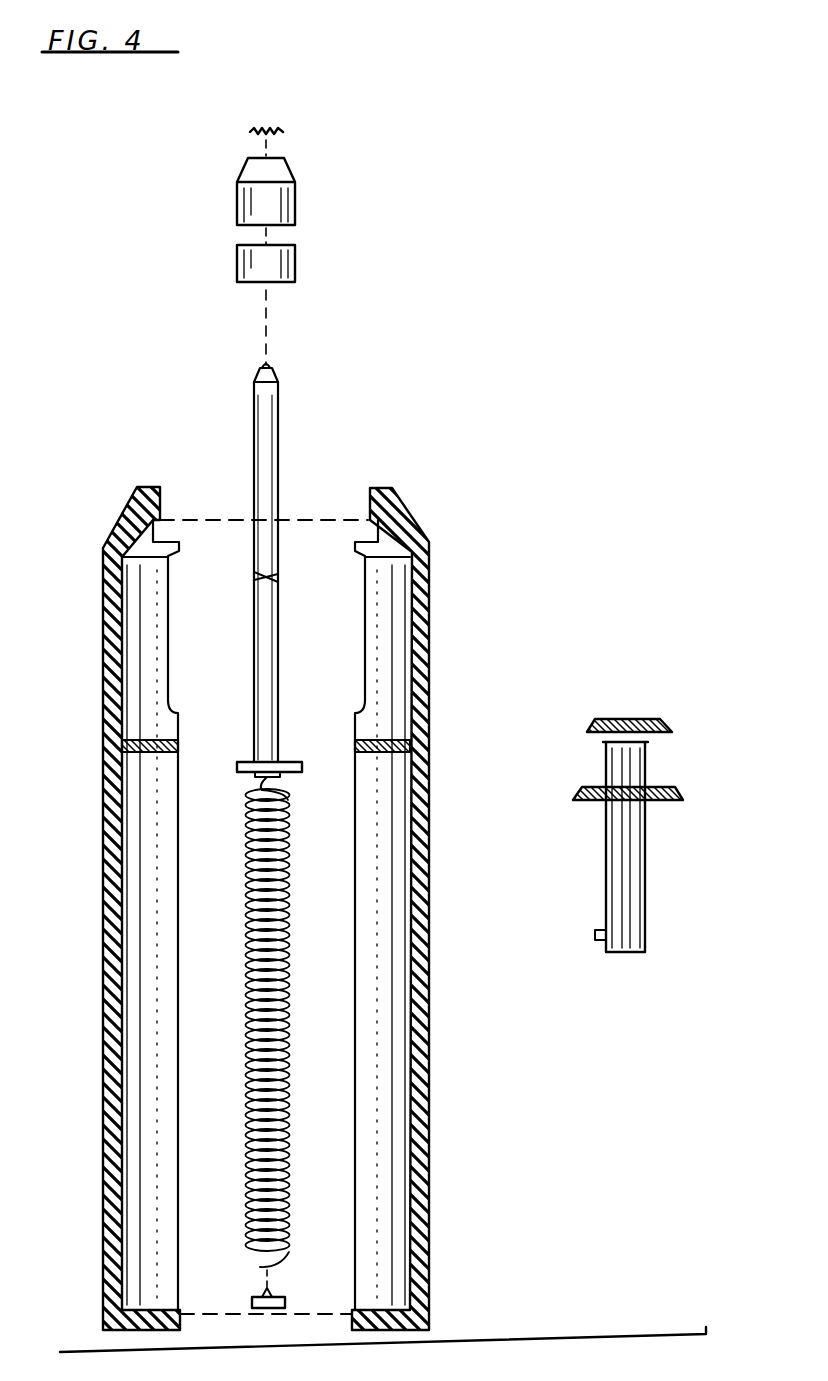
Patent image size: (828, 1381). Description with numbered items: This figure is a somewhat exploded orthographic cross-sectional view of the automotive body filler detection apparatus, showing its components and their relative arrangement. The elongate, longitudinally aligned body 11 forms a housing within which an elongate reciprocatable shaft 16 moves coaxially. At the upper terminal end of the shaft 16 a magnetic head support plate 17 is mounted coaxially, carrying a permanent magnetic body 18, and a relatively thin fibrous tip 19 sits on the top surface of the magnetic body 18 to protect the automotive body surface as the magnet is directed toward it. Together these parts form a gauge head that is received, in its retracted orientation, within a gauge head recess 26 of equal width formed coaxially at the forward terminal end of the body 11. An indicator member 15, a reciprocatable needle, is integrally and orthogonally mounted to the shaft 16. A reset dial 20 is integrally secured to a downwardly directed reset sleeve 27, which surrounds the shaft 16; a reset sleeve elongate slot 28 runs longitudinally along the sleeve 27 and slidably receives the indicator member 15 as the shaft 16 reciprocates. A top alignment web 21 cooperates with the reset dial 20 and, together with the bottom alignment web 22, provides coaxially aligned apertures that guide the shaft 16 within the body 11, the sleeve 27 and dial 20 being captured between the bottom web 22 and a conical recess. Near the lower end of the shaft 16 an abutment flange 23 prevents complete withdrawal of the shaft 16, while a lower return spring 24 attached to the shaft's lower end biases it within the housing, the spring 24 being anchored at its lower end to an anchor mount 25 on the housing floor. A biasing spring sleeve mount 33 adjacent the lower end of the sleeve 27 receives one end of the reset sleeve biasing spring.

The body 11 is at (430, 562).
The indicator member 15 is at (278, 578).
The reciprocatable shaft 16 is at (268, 456).
The magnetic head support plate 17 is at (296, 262).
The permanent magnetic body 18 is at (296, 204).
The fibrous tip 19 is at (285, 132).
The reset dial 20 is at (685, 795).
The top alignment web 21 is at (667, 722).
The bottom alignment web 22 is at (163, 742).
The abutment flange 23 is at (283, 760).
The lower return spring 24 is at (290, 895).
The anchor mount 25 is at (285, 1303).
The gauge head recess 26 is at (357, 510).
The reset sleeve 27 is at (648, 777).
The reset sleeve elongate slot 28 is at (632, 752).
The biasing spring sleeve mount 33 is at (595, 941).